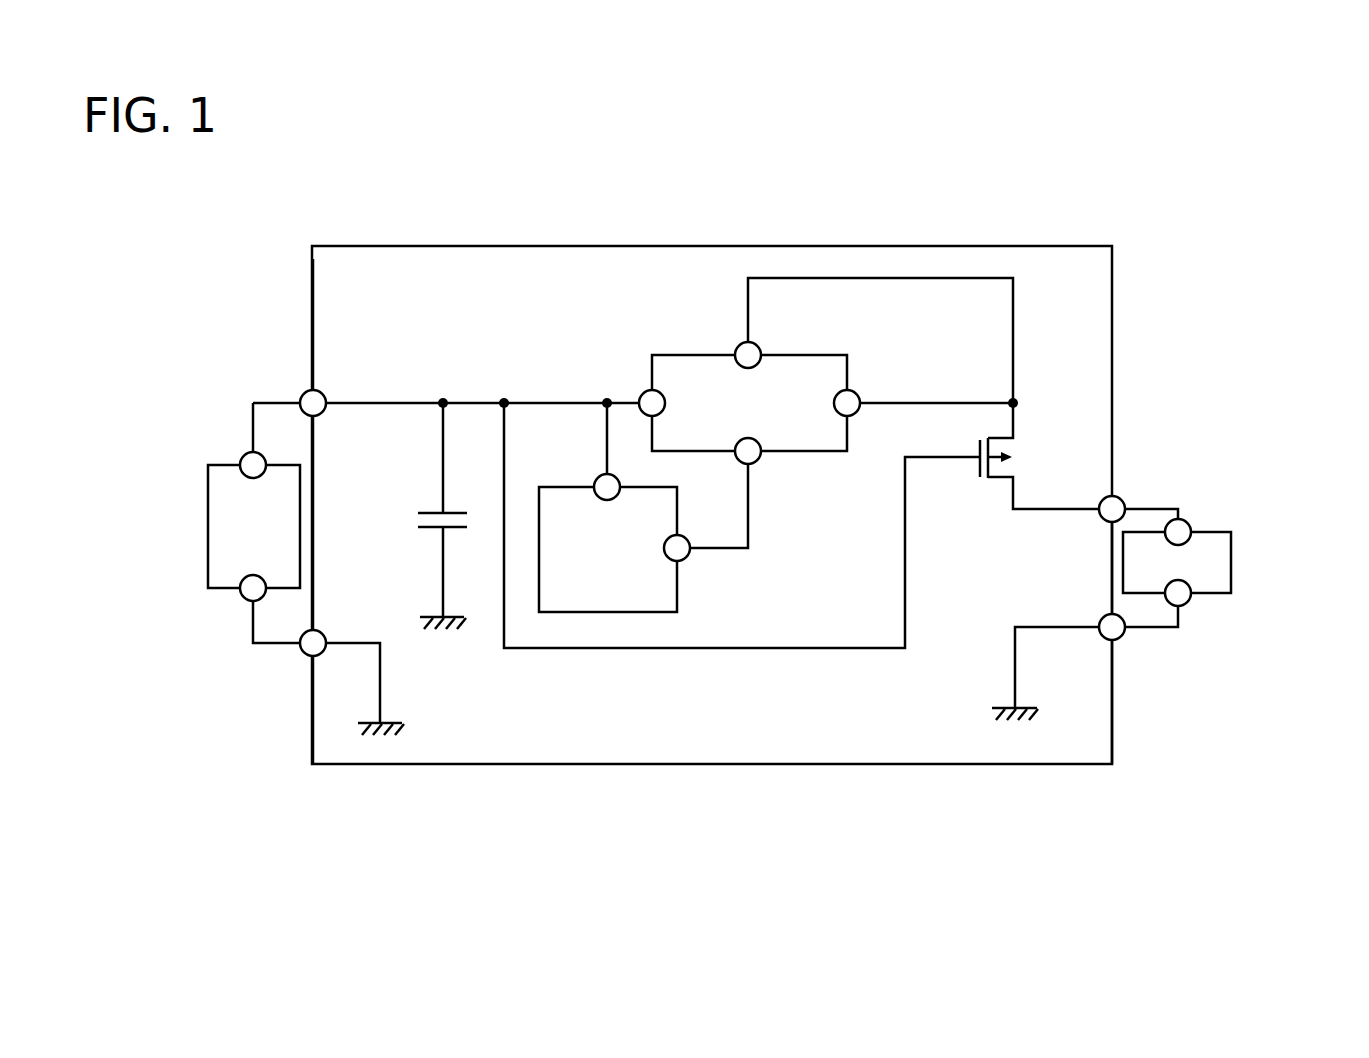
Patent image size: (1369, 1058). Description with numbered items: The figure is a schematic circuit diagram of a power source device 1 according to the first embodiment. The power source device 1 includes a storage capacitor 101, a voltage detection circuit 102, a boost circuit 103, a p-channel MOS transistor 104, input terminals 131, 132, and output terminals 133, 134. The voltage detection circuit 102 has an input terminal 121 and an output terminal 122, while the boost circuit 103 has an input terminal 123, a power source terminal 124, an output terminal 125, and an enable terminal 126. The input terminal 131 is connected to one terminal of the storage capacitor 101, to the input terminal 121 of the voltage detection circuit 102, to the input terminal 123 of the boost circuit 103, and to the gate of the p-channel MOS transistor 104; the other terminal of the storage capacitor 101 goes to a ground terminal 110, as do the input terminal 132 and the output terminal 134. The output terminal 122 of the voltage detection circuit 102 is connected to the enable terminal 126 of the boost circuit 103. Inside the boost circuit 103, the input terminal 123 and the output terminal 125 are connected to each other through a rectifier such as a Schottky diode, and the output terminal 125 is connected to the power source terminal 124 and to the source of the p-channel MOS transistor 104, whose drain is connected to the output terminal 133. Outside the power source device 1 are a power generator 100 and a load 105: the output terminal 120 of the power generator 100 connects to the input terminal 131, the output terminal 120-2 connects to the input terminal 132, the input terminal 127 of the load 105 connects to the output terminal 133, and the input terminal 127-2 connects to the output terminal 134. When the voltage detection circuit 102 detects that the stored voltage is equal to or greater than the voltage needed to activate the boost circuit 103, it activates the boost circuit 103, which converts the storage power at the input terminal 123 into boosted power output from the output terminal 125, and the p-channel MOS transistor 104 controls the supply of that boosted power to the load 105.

The power source device 1 is at (482, 246).
The power generator 100 is at (208, 523).
The storage capacitor 101 is at (460, 511).
The voltage detection circuit 102 is at (680, 584).
The boost circuit 103 is at (695, 353).
The p-channel MOS transistor 104 is at (1015, 450).
The load 105 is at (1232, 566).
The ground terminal 110 is at (396, 720).
The output terminal of the power generator 120 is at (243, 456).
The output terminal of the power generator 120-2 is at (245, 600).
The input terminal of the voltage detection circuit 121 is at (595, 478).
The output terminal of the voltage detection circuit 122 is at (690, 538).
The input terminal of the boost circuit 123 is at (644, 394).
The power source terminal of the boost circuit 124 is at (760, 345).
The output terminal of the boost circuit 125 is at (858, 394).
The enable terminal of the boost circuit 126 is at (760, 463).
The input terminal of the load 127 is at (1190, 523).
The input terminal of the load 127-2 is at (1188, 605).
The input terminal 131 is at (304, 393).
The input terminal 132 is at (303, 656).
The output terminal 133 is at (1122, 498).
The output terminal 134 is at (1122, 640).